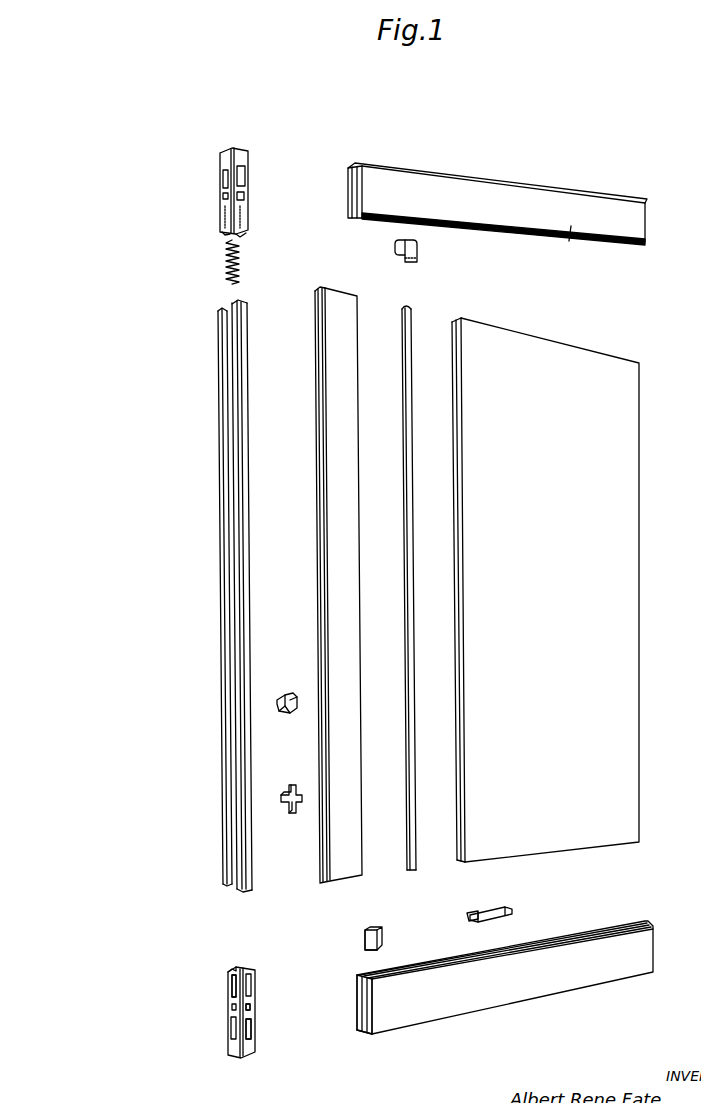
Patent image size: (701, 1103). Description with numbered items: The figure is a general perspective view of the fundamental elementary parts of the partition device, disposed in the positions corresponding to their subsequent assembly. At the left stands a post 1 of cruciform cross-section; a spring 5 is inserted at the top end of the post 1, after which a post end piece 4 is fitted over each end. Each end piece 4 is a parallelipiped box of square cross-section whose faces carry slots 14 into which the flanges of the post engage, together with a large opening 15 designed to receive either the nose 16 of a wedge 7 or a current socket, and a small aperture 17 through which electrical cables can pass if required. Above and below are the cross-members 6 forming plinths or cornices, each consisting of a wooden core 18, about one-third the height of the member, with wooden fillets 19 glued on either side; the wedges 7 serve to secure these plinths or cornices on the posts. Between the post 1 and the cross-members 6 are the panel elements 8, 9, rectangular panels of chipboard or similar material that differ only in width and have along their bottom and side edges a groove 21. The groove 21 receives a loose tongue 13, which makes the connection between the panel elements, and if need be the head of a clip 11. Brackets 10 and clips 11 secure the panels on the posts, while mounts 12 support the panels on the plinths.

The post 1 is at (243, 588).
The post end piece 4 is at (243, 155).
The spring 5 is at (238, 250).
The cross-member 6 is at (465, 1056).
The wedge 7 is at (418, 264).
The panel element 8 is at (600, 367).
The panel element 9 is at (347, 307).
The bracket 10 is at (290, 815).
The clip 11 is at (287, 691).
The mount 12 is at (513, 910).
The loose tongue 13 is at (411, 322).
The slot 14 is at (250, 992).
The large opening 15 is at (253, 1040).
The nose 16 is at (365, 936).
The small aperture 17 is at (255, 1018).
The wooden core 18 is at (365, 1030).
The fillet 19 is at (357, 1003).
The groove 21 is at (455, 382).